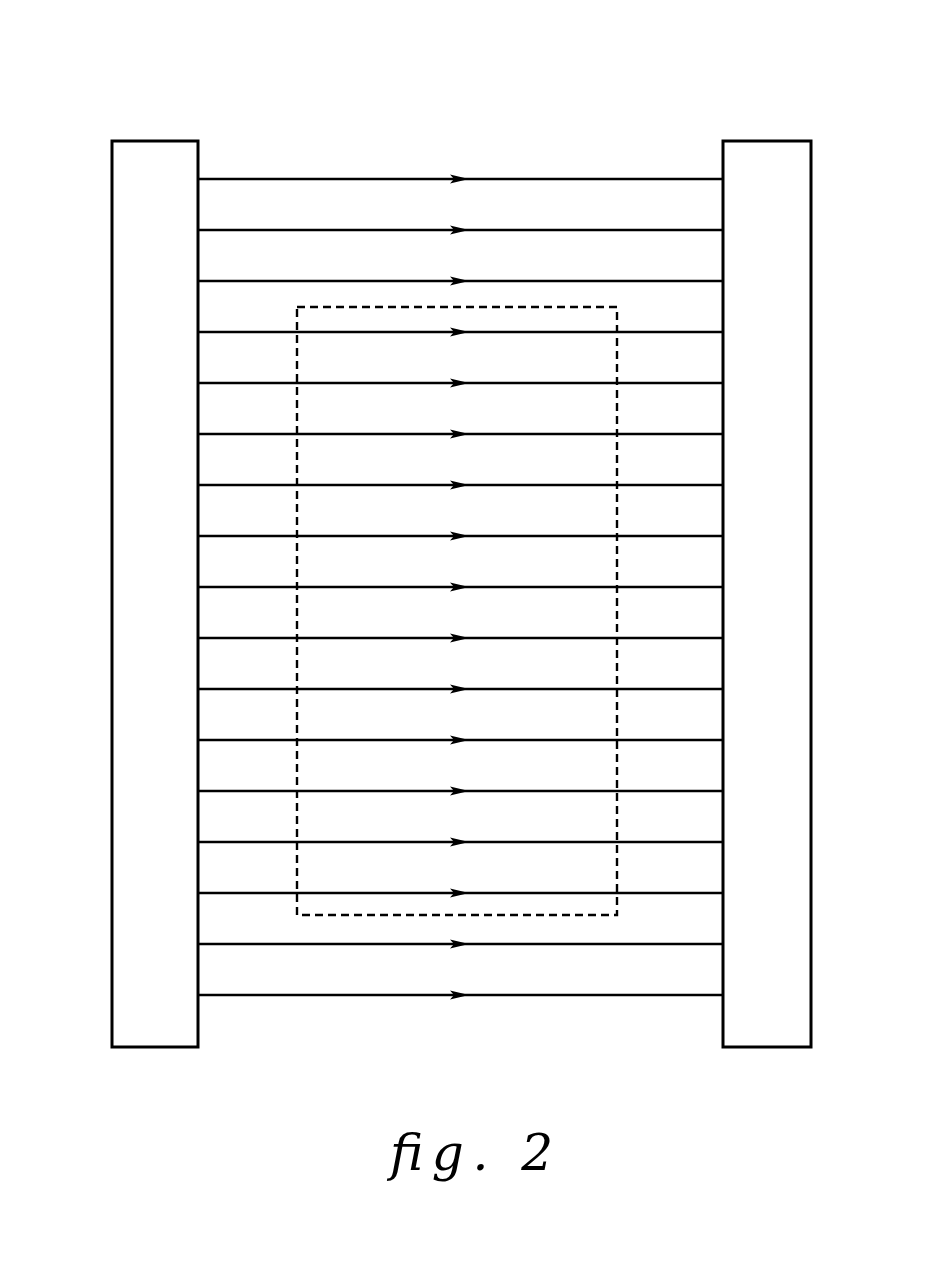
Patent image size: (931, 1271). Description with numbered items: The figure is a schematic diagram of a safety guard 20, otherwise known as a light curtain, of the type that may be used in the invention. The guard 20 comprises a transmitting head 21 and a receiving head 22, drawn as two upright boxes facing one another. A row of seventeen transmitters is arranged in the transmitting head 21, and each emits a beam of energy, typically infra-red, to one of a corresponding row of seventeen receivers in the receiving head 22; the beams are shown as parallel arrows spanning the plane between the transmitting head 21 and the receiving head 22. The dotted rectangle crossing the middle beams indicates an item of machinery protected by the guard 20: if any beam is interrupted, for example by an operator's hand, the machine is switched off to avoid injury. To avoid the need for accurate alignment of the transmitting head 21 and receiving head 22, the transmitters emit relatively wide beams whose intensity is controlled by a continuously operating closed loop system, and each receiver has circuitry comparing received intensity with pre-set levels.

The safety guard 20 is at (549, 147).
The transmitting head 21 is at (112, 1012).
The receiving head 22 is at (811, 1000).